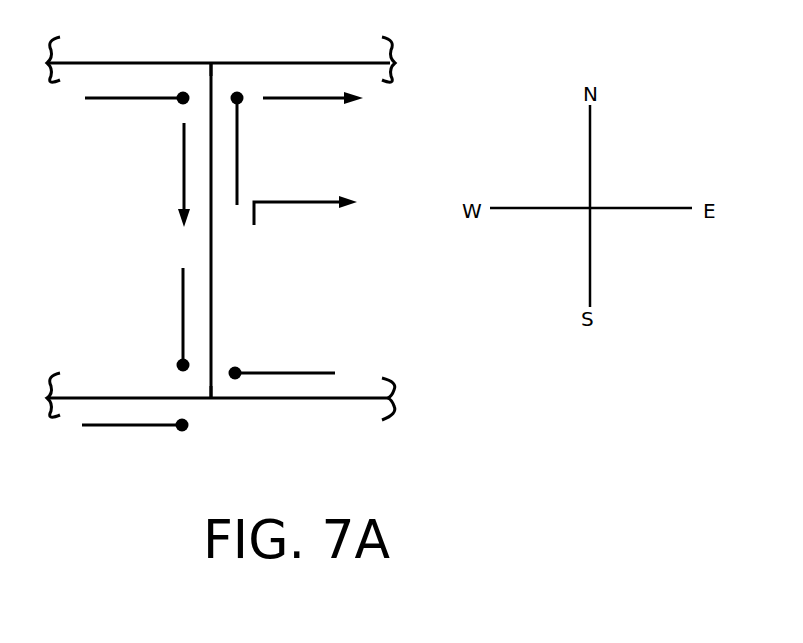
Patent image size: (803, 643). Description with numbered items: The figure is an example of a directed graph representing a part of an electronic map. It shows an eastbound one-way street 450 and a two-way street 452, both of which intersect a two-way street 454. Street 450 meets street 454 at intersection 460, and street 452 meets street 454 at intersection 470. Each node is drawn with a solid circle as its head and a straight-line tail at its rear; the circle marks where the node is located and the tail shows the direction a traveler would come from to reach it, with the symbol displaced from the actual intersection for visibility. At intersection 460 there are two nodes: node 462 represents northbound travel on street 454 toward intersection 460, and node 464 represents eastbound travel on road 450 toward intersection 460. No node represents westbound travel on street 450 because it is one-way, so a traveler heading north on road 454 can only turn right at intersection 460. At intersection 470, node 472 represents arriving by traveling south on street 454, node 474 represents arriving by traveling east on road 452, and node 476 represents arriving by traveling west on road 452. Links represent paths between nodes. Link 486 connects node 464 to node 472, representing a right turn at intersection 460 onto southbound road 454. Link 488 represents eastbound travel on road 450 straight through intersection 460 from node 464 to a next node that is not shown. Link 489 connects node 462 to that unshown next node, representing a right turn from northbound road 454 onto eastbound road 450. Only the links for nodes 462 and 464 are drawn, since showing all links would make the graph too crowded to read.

The eastbound one-way street 450 is at (318, 63).
The two-way street 452 is at (300, 398).
The two-way street 454 is at (211, 285).
The intersection 460 is at (211, 63).
The intersection 470 is at (210, 398).
The node 462 is at (239, 165).
The node 464 is at (157, 101).
The node 472 is at (182, 294).
The node 474 is at (168, 427).
The node 476 is at (252, 370).
The link 486 is at (182, 155).
The link 488 is at (338, 103).
The link 489 is at (333, 207).